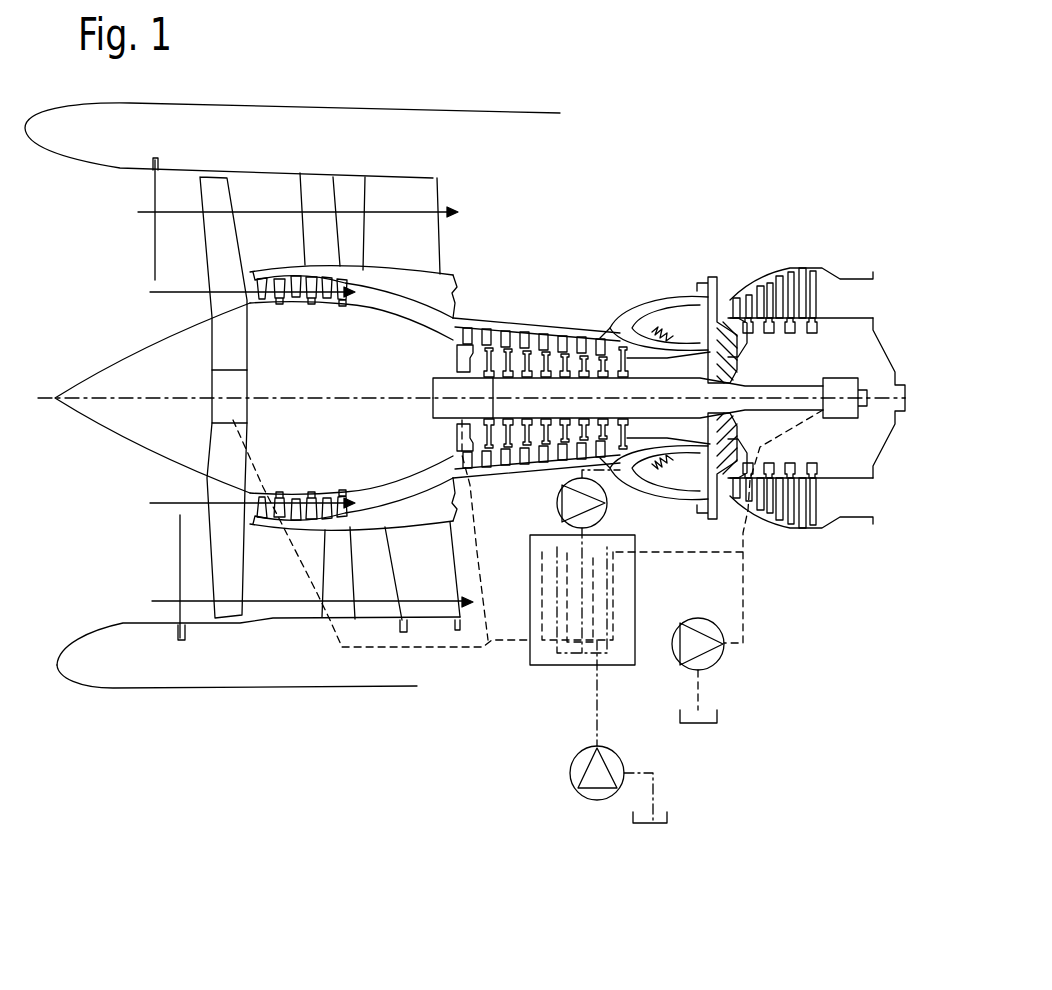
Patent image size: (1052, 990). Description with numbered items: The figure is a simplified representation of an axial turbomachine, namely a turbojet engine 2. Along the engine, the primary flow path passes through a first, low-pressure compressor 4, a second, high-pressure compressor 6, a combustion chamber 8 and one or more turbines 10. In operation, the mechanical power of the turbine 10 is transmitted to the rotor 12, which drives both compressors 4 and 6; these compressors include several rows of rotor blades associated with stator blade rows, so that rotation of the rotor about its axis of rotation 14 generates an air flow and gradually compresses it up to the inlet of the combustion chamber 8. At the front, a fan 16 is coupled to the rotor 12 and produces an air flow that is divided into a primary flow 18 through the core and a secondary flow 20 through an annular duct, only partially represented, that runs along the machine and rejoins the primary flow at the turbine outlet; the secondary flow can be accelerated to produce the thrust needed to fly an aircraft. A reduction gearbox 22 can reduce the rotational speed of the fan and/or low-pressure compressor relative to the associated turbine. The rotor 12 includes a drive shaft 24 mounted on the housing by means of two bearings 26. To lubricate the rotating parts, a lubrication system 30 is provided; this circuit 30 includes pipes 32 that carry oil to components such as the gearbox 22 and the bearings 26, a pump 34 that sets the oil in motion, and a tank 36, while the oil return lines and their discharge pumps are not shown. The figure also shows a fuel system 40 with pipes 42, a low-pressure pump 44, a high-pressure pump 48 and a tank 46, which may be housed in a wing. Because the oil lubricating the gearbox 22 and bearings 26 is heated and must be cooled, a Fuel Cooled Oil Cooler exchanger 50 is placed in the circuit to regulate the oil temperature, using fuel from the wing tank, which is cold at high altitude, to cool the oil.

The turbojet engine 2 is at (597, 157).
The low-pressure compressor 4 is at (273, 305).
The high-pressure compressor 6 is at (515, 327).
The combustion chamber 8 is at (678, 313).
The turbine 10 is at (798, 290).
The rotor 12 is at (763, 373).
The axis of rotation 14 is at (345, 393).
The fan 16 is at (218, 237).
The primary flow 18 is at (236, 403).
The secondary flow 20 is at (290, 409).
The reduction gearbox 22 is at (235, 413).
The drive shaft 24 is at (613, 390).
The bearings 26 is at (438, 405).
The lubrication system 30 is at (773, 603).
The pipes 32 is at (477, 550).
The pump 34 is at (724, 660).
The tank 36 is at (718, 724).
The fuel system 40 is at (513, 707).
The pipes 42 is at (588, 697).
The low-pressure pump 44 is at (607, 798).
The tank 46 is at (672, 822).
The high-pressure pump 48 is at (558, 517).
The Fuel Cooled Oil Cooler exchanger 50 is at (530, 597).